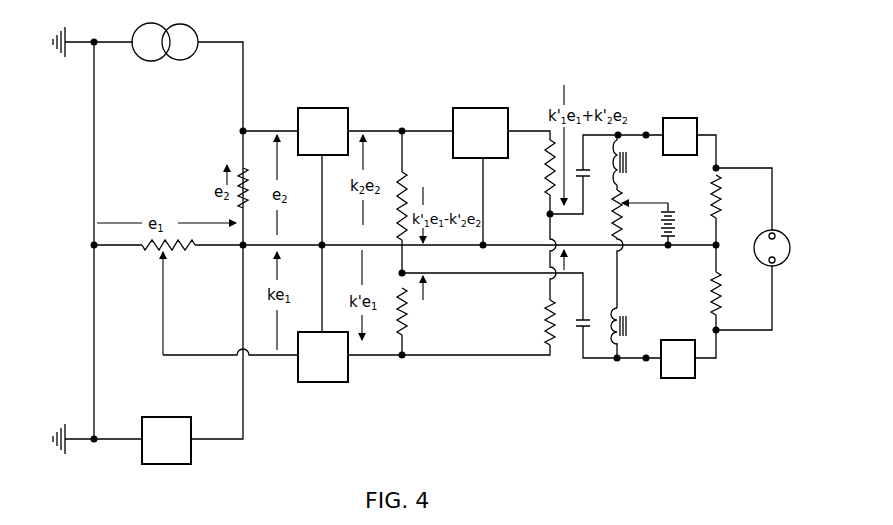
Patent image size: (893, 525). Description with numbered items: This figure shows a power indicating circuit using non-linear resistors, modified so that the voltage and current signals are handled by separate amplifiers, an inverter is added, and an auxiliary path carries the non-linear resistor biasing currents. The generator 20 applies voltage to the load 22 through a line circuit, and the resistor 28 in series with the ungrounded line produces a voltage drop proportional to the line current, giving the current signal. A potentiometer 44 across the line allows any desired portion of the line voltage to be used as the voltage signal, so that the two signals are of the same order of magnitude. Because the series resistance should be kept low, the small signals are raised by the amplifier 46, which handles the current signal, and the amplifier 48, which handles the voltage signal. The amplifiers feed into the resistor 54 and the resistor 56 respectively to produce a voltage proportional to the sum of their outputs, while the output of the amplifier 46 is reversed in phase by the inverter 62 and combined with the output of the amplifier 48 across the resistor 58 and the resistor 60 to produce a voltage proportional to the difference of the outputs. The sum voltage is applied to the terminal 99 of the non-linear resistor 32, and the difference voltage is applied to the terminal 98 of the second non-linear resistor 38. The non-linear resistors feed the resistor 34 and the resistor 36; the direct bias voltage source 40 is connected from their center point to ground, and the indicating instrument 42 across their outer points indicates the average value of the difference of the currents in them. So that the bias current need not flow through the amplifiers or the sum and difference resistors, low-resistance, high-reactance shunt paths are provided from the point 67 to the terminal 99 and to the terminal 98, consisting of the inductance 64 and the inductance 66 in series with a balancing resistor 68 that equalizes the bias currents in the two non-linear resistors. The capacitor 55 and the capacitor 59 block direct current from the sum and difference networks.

The generator 20 is at (182, 32).
The load 22 is at (191, 457).
The resistor 28 is at (248, 180).
The non-linear resistor 32 is at (707, 124).
The resistor 34 is at (720, 195).
The resistor 36 is at (731, 277).
The second non-linear resistor 38 is at (690, 378).
The direct bias voltage source 40 is at (672, 210).
The indicating instrument 42 is at (783, 237).
The potentiometer 44 is at (148, 248).
The amplifier 46 is at (348, 111).
The amplifier 48 is at (348, 378).
The resistor 54 is at (414, 172).
The capacitor 55 is at (586, 174).
The resistor 56 is at (405, 322).
The resistor 58 is at (546, 169).
The capacitor 59 is at (586, 319).
The resistor 60 is at (546, 322).
The inverter 62 is at (508, 113).
The inductance 64 is at (627, 163).
The inductance 66 is at (627, 321).
The point 67 is at (668, 248).
The balancing resistor 68 is at (628, 214).
The terminal 98 is at (646, 360).
The terminal 99 is at (646, 133).